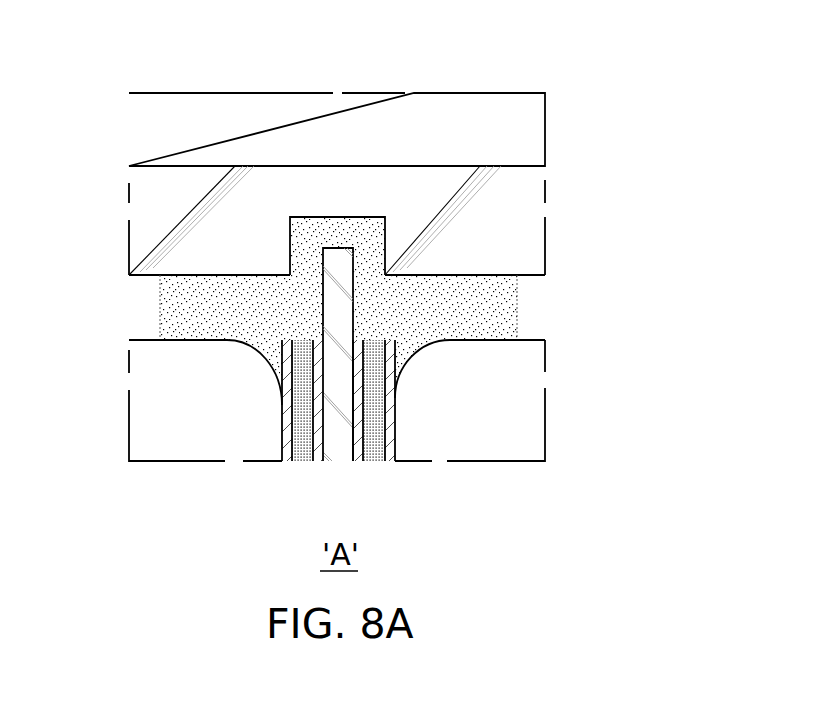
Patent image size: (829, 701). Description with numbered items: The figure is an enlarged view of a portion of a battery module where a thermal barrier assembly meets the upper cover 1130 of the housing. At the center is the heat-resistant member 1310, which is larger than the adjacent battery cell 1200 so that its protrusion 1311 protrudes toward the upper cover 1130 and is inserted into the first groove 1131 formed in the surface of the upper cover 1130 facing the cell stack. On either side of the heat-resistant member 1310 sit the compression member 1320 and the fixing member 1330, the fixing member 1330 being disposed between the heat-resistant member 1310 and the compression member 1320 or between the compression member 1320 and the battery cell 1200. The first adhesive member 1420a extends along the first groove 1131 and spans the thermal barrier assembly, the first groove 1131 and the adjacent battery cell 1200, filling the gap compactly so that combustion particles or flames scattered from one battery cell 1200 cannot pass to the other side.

The upper cover 1130 is at (531, 227).
The first groove 1131 is at (336, 233).
The protrusion 1311 is at (348, 265).
The first adhesive member 1420a is at (531, 300).
The battery cell 1200 is at (146, 413).
The fixing member 1330 is at (318, 413).
The compression member 1320 is at (300, 453).
The heat-resistant member 1310 is at (337, 452).